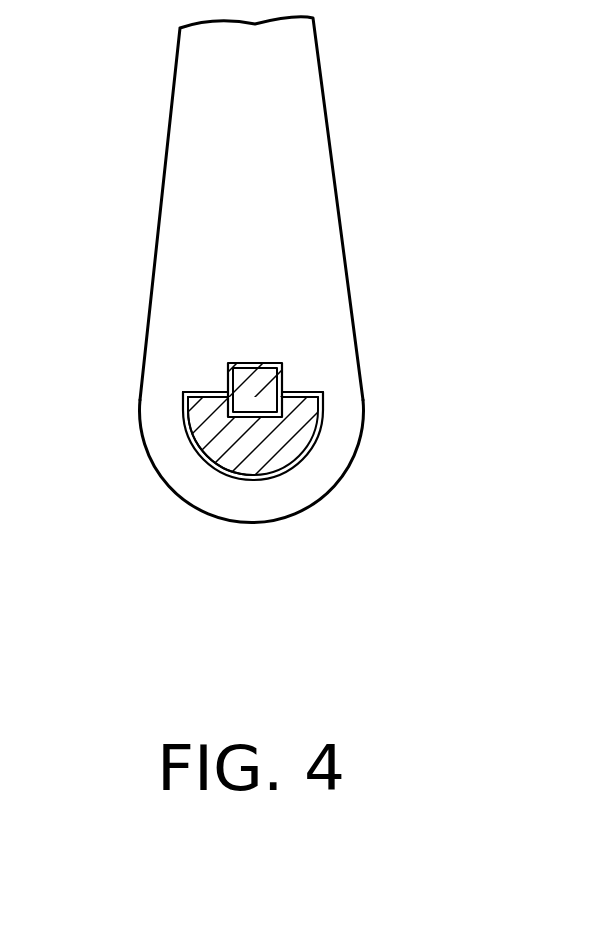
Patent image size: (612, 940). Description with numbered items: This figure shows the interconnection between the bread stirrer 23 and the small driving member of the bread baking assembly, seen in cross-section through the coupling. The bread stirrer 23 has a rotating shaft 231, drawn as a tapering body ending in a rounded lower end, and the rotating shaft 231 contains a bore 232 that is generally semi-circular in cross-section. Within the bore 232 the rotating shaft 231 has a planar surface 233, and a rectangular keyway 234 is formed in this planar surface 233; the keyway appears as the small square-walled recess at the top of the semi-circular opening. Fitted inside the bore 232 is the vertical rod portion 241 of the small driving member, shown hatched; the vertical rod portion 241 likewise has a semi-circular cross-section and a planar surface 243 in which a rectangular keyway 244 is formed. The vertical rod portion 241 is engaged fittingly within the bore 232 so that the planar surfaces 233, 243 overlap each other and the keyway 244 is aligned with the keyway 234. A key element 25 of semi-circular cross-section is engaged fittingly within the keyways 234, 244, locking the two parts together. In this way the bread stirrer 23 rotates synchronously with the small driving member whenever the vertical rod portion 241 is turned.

The bread stirrer 23 is at (322, 158).
The rotating shaft 231 is at (352, 399).
The bore 232 is at (322, 430).
The planar surface 233 is at (208, 392).
The rectangular keyway 234 is at (253, 363).
The vertical rod portion 241 is at (247, 460).
The planar surface 243 is at (195, 391).
The rectangular keyway 244 is at (212, 460).
The key element 25 is at (190, 437).